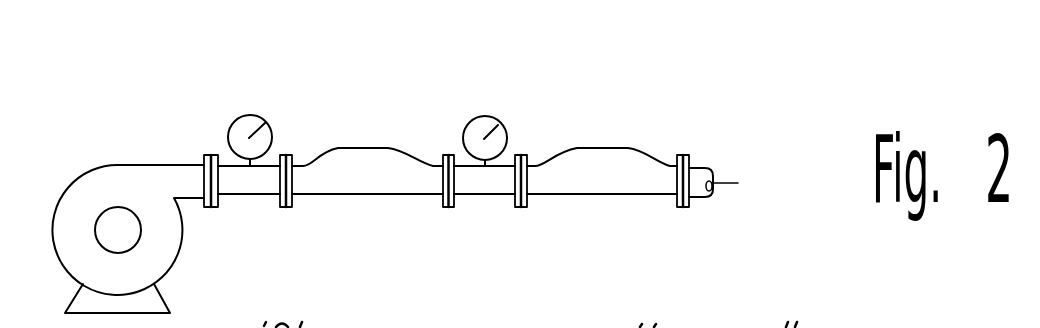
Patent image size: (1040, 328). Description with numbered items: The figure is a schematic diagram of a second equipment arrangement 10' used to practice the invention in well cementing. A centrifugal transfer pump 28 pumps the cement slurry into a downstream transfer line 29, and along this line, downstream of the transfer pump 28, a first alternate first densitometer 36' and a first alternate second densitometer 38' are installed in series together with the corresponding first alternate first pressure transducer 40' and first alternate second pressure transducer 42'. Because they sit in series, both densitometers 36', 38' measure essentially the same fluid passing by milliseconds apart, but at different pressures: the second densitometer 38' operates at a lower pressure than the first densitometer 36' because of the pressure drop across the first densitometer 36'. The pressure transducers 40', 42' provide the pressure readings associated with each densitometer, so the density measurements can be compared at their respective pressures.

The second equipment arrangement 10' is at (419, 170).
The centrifugal transfer pump 28 is at (140, 165).
The downstream transfer line 29 is at (702, 198).
The first alternate first densitometer 36' is at (367, 127).
The first alternate second densitometer 38' is at (605, 136).
The first alternate first pressure transducer 40' is at (245, 99).
The first alternate second pressure transducer 42' is at (513, 121).